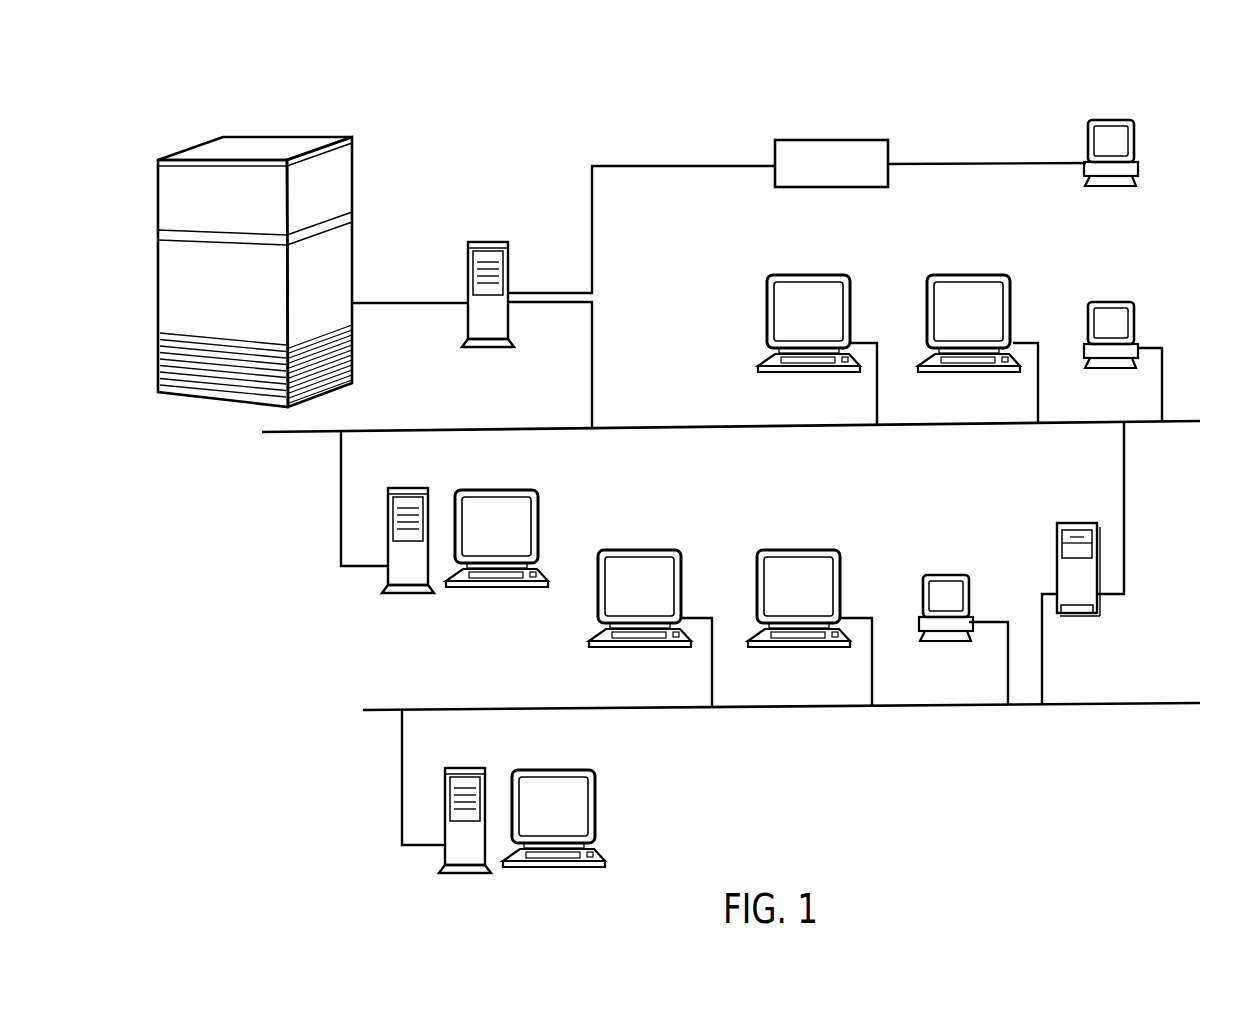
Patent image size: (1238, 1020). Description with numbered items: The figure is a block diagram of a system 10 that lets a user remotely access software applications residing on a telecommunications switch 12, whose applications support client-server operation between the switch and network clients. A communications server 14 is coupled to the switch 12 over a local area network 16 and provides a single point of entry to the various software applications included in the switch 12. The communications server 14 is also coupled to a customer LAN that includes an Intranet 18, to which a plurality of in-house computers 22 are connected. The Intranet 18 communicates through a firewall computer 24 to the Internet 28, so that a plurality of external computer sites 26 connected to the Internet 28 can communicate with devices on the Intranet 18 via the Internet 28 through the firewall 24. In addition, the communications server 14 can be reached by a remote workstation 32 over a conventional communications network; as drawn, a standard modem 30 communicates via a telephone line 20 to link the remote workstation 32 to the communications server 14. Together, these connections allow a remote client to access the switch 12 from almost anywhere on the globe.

The system 10 is at (1214, 67).
The telecommunications switch 12 is at (352, 165).
The communications server 14 is at (512, 322).
The local area network 16 is at (400, 305).
The Intranet 18 is at (626, 427).
The telephone line 20 is at (656, 164).
The in-house computers 22 is at (920, 250).
The firewall computer 24 is at (1077, 522).
The external computer sites 26 is at (818, 524).
The Internet 28 is at (1065, 705).
The modem 30 is at (853, 140).
The remote workstation 32 is at (1088, 133).